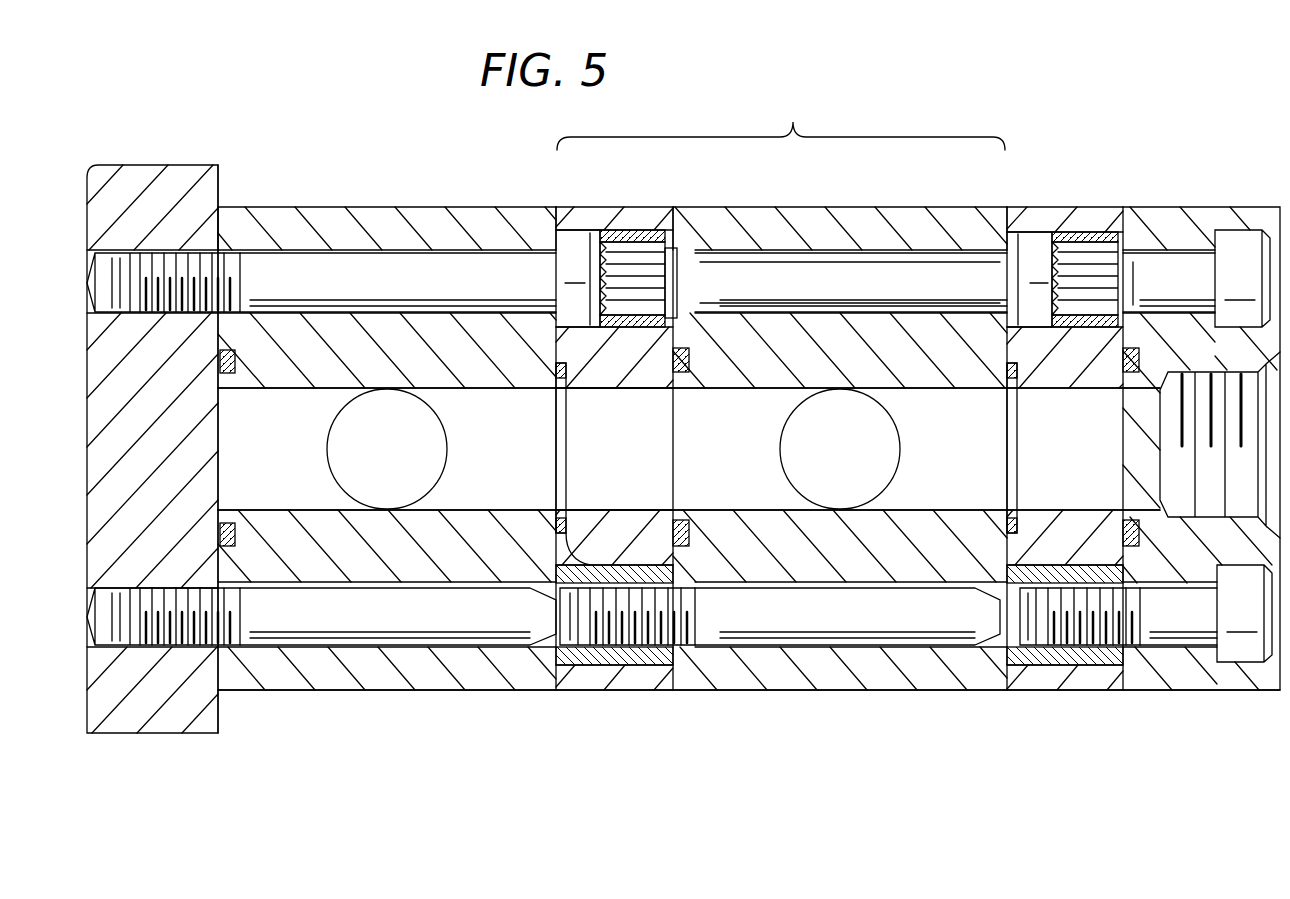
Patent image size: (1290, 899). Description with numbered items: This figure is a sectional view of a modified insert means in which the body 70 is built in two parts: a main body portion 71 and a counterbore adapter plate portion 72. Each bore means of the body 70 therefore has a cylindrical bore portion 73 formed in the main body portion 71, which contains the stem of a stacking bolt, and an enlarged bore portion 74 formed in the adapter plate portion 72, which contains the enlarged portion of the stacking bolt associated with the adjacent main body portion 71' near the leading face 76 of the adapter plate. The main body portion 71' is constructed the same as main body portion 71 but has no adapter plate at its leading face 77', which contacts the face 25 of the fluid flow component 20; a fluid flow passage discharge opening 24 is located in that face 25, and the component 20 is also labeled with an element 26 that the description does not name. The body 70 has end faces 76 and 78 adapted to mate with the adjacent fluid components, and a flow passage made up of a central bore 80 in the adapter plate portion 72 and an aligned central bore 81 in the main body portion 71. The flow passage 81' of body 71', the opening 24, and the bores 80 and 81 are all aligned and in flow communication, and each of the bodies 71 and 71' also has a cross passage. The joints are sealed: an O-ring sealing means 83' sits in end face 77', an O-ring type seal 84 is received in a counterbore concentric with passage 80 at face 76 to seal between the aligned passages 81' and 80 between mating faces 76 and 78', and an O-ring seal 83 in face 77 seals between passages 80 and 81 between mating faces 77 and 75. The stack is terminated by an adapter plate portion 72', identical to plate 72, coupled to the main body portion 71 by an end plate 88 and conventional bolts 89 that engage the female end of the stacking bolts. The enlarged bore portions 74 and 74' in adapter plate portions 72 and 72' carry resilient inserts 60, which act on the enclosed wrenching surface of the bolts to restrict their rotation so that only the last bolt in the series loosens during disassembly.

The fluid flow component 20 is at (148, 175).
The fluid flow passage discharge opening 24 is at (165, 392).
The face 25 is at (225, 720).
The lower wall 26 is at (145, 525).
The resilient insert 60 is at (630, 232).
The body 70 is at (781, 121).
The main body portion 71 is at (840, 424).
The main body portion 71' is at (387, 439).
The adapter plate portion 72 is at (614, 428).
The adapter plate portion 72' is at (1065, 415).
The cylindrical bore portion 73 is at (850, 252).
The enlarged bore portion 74 is at (572, 489).
The enlarged bore portion 74' is at (1065, 448).
The mating face 75 is at (688, 520).
The leading face 76 is at (550, 215).
The face 77 is at (669, 208).
The leading face 77' is at (245, 208).
The end face 78 is at (1019, 209).
The mating face 78' is at (598, 513).
The central bore 80 is at (618, 388).
The central bore 81 is at (820, 449).
The flow passage 81' is at (365, 449).
The O-ring seal 83 is at (701, 388).
The O-ring sealing means 83' is at (250, 448).
The O-ring type seal 84 is at (556, 400).
The end plate 88 is at (1198, 207).
The bolt 89 is at (1242, 245).